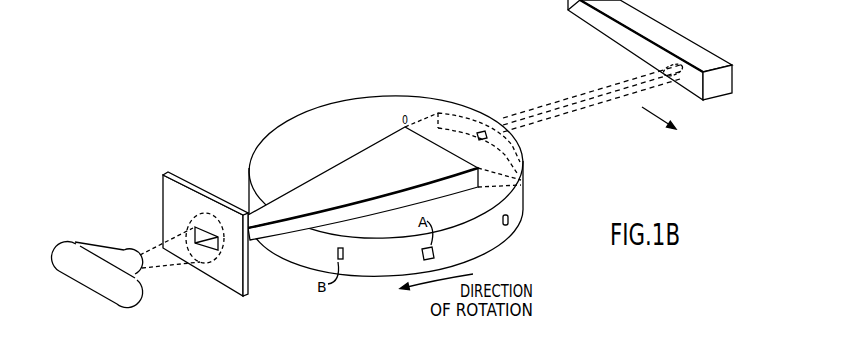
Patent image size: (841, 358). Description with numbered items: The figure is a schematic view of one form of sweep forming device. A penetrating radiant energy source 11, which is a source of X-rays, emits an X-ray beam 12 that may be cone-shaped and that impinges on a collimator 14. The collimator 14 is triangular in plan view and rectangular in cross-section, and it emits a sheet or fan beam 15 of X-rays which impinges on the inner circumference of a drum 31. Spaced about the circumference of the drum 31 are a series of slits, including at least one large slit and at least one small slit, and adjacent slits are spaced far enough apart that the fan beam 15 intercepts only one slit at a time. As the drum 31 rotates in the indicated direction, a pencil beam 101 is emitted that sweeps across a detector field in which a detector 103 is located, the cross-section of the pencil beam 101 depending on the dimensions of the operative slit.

The penetrating radiant energy source 11 is at (119, 256).
The X-ray beam 12 is at (177, 264).
The collimator 14 is at (399, 176).
The fan beam 15 is at (457, 122).
The drum 31 is at (333, 108).
The pencil beam 101 is at (578, 97).
The detector 103 is at (688, 44).